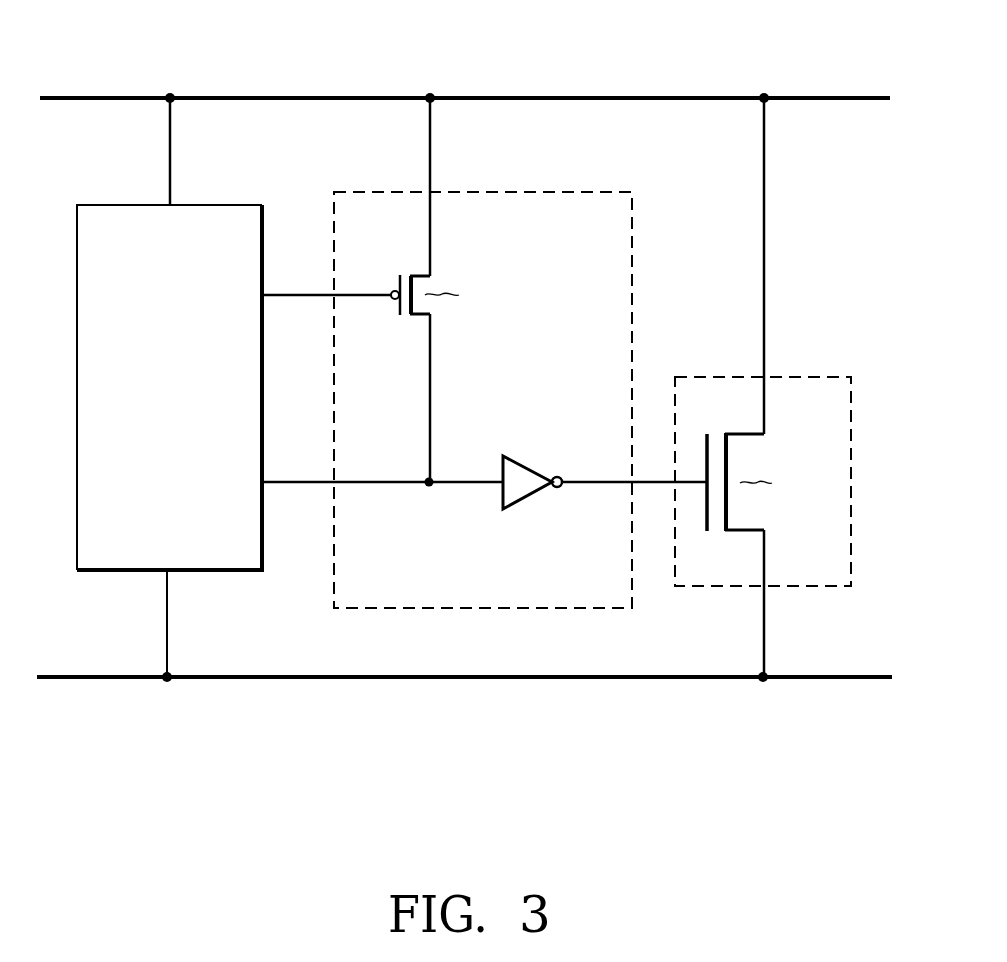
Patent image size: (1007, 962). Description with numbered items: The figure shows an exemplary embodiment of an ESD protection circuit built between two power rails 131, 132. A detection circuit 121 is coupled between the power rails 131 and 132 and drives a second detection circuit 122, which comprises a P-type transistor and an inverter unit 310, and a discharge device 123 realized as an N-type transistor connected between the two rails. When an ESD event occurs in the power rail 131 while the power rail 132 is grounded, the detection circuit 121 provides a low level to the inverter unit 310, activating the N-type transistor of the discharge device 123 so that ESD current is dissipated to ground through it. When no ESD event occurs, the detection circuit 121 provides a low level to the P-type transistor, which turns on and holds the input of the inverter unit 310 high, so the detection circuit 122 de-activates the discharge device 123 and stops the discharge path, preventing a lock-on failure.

The detection circuit 121 is at (214, 574).
The detection circuit 122 is at (496, 353).
The discharge device 123 is at (823, 590).
The power rail 131 is at (825, 96).
The power rail 132 is at (826, 680).
The inverter unit 310 is at (530, 470).